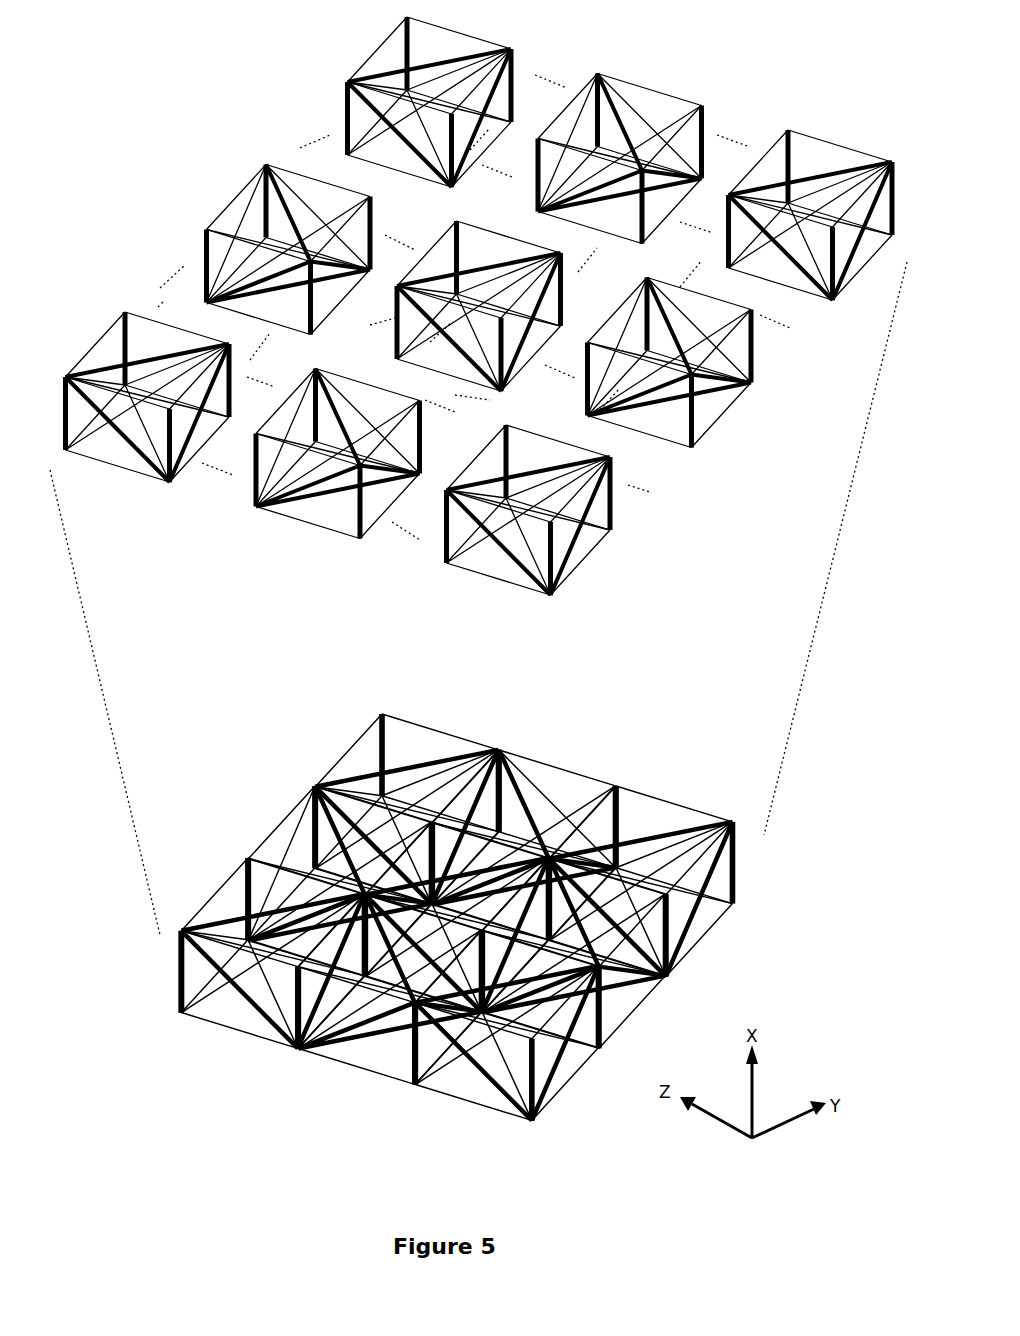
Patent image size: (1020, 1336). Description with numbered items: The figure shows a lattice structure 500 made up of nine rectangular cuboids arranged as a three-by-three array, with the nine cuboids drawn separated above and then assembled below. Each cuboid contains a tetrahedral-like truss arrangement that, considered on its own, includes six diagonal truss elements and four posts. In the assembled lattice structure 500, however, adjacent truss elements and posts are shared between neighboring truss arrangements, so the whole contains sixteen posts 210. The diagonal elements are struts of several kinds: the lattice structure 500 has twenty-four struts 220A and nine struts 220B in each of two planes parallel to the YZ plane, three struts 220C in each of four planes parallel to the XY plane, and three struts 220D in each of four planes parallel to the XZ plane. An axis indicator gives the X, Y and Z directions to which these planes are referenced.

The 3×3 lattice structure 500 is at (460, 888).
The post 210 is at (178, 976).
The strut 220A is at (262, 845).
The strut 220B is at (535, 822).
The strut 220C is at (698, 912).
The strut 220D is at (475, 1063).